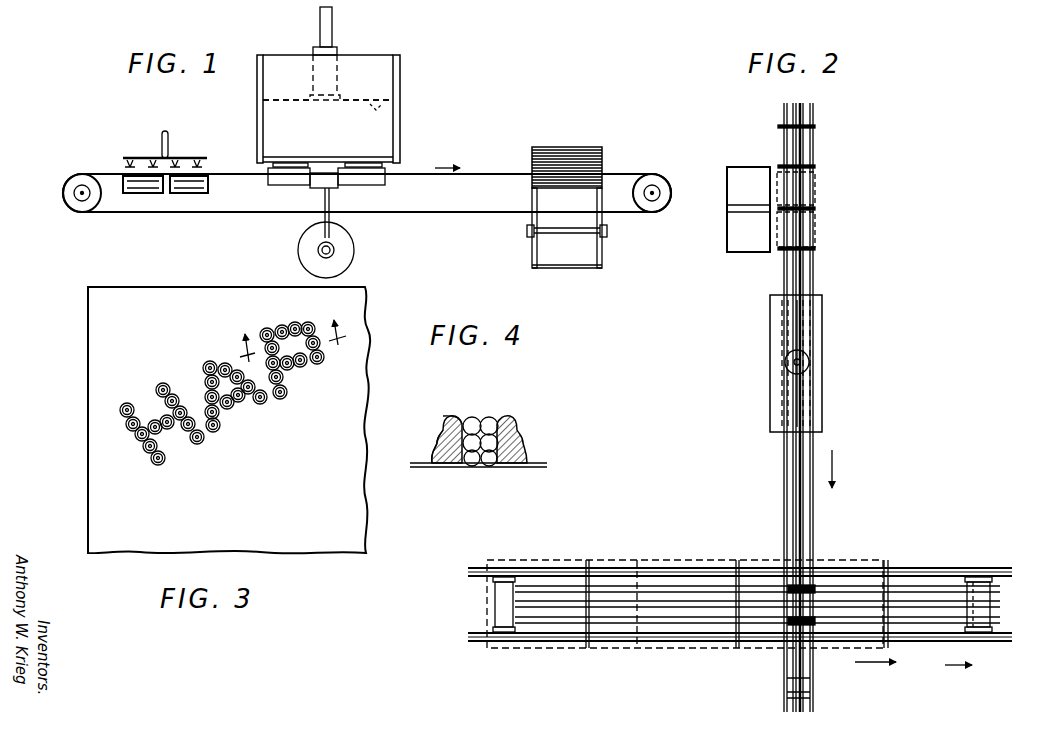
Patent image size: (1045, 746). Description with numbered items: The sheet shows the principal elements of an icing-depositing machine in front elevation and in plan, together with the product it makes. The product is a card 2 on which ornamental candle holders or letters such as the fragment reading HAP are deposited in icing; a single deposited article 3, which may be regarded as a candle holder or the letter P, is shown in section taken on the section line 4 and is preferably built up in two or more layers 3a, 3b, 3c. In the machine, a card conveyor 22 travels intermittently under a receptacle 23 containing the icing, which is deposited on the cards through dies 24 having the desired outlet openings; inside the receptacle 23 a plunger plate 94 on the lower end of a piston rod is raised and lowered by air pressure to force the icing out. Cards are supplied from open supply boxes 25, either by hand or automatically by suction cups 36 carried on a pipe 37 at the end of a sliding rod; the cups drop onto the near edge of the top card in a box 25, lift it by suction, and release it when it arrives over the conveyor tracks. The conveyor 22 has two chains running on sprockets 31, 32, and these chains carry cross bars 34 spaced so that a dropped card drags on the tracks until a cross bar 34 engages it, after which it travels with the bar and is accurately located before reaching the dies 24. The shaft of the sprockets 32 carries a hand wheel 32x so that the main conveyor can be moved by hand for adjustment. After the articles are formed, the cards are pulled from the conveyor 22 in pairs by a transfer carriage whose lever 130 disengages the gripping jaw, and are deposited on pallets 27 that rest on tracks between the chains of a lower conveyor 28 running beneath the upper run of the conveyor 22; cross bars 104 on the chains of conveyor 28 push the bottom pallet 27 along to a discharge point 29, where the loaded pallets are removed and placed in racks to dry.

In FIG. 2, the card 2 is at (817, 192).
In FIG. 3, the card 2 is at (103, 380).
In FIG. 4, the card 2 is at (537, 462).
In FIG. 3, the deposited article 3 is at (266, 328).
In FIG. 4, the deposited article 3 is at (473, 405).
In FIG. 4, the first layer 3a is at (432, 455).
In FIG. 4, the second layer 3b is at (440, 438).
In FIG. 4, the third layer 3c is at (445, 418).
In FIG. 3, the section line 4 is at (284, 346).
In FIG. 1, the card conveyor 22 is at (470, 172).
In FIG. 2, the card conveyor 22 is at (816, 150).
In FIG. 1, the receptacle 23 is at (400, 84).
In FIG. 2, the receptacle 23 is at (776, 377).
In FIG. 1, the dies 24 is at (283, 165).
In FIG. 1, the supply boxes 25 is at (150, 194).
In FIG. 2, the supply boxes 25 is at (738, 182).
In FIG. 1, the pallets 27 is at (603, 148).
In FIG. 2, the pallets 27 is at (548, 560).
In FIG. 1, the pallet conveyor 28 is at (603, 258).
In FIG. 2, the pallet conveyor 28 is at (660, 643).
In FIG. 2, the discharge point 29 is at (971, 666).
In FIG. 1, the sprocket 31 is at (62, 200).
In FIG. 1, the sprocket 32 is at (657, 213).
In FIG. 1, the hand wheel 32x is at (657, 178).
In FIG. 2, the cross bars 34 is at (816, 126).
In FIG. 1, the suction cups 36 is at (152, 157).
In FIG. 1, the pipe 37 is at (178, 157).
In FIG. 1, the plunger plate 94 is at (400, 108).
In FIG. 2, the cross bars 104 is at (890, 562).
In FIG. 2, the lever 130 is at (812, 585).